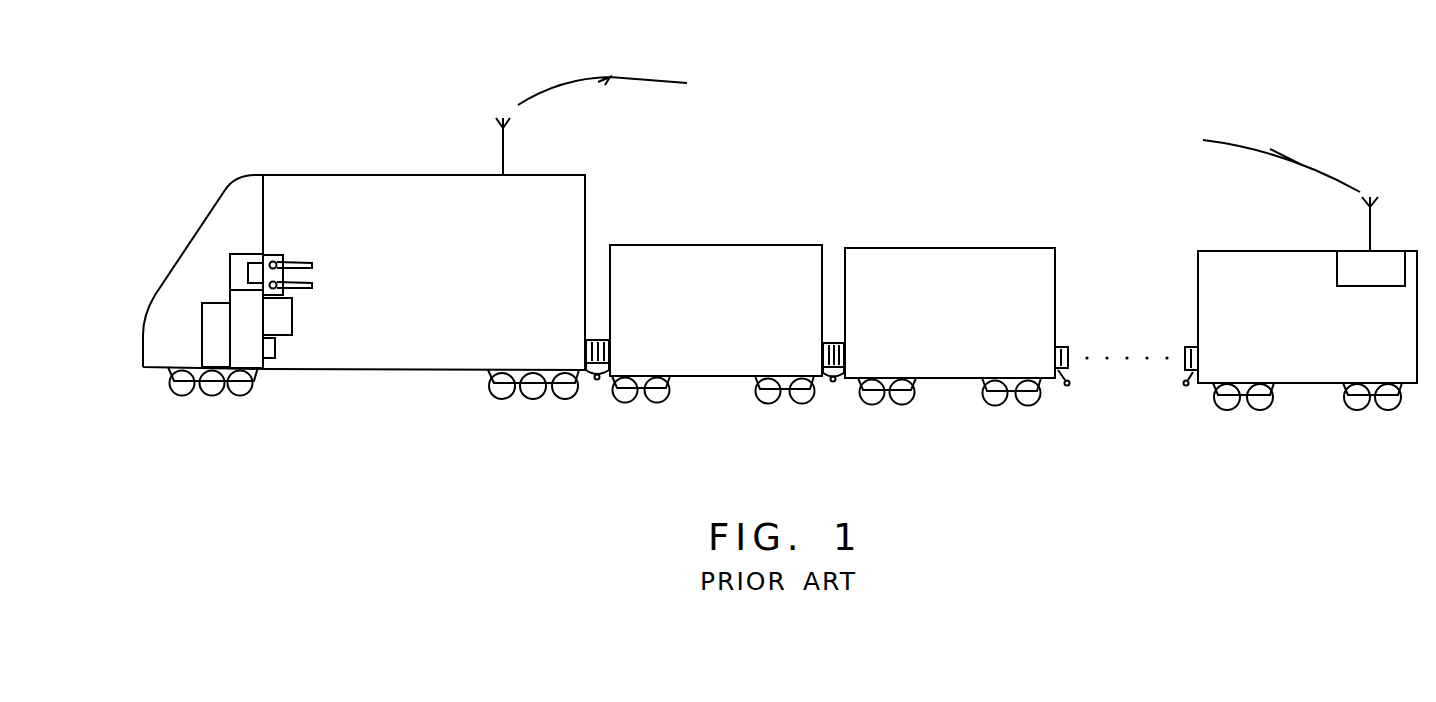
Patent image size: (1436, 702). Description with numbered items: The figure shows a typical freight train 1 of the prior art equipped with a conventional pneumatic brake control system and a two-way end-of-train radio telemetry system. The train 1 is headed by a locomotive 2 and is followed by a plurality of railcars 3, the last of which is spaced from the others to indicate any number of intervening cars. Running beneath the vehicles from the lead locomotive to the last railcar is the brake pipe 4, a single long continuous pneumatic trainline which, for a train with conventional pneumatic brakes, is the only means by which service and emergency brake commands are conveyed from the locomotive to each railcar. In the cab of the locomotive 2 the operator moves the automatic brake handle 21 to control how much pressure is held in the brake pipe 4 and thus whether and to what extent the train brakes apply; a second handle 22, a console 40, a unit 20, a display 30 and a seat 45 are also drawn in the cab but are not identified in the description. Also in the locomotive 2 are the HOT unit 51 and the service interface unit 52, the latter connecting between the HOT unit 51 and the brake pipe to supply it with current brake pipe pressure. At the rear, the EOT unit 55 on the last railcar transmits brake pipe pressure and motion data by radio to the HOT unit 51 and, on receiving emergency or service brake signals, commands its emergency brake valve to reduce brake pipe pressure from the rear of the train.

The freight train 1 is at (334, 106).
The locomotive 2 is at (545, 177).
The railcar 3 is at (777, 245).
The brake pipe 4 is at (598, 382).
The control unit 20 is at (274, 257).
The automatic brake handle 21 is at (312, 265).
The throttle handle 22 is at (312, 287).
The display 30 is at (253, 264).
The control console 40 is at (230, 272).
The seat 45 is at (202, 323).
The HOT unit 51 is at (292, 314).
The service interface unit 52 is at (275, 352).
The EOT unit 55 is at (1383, 255).